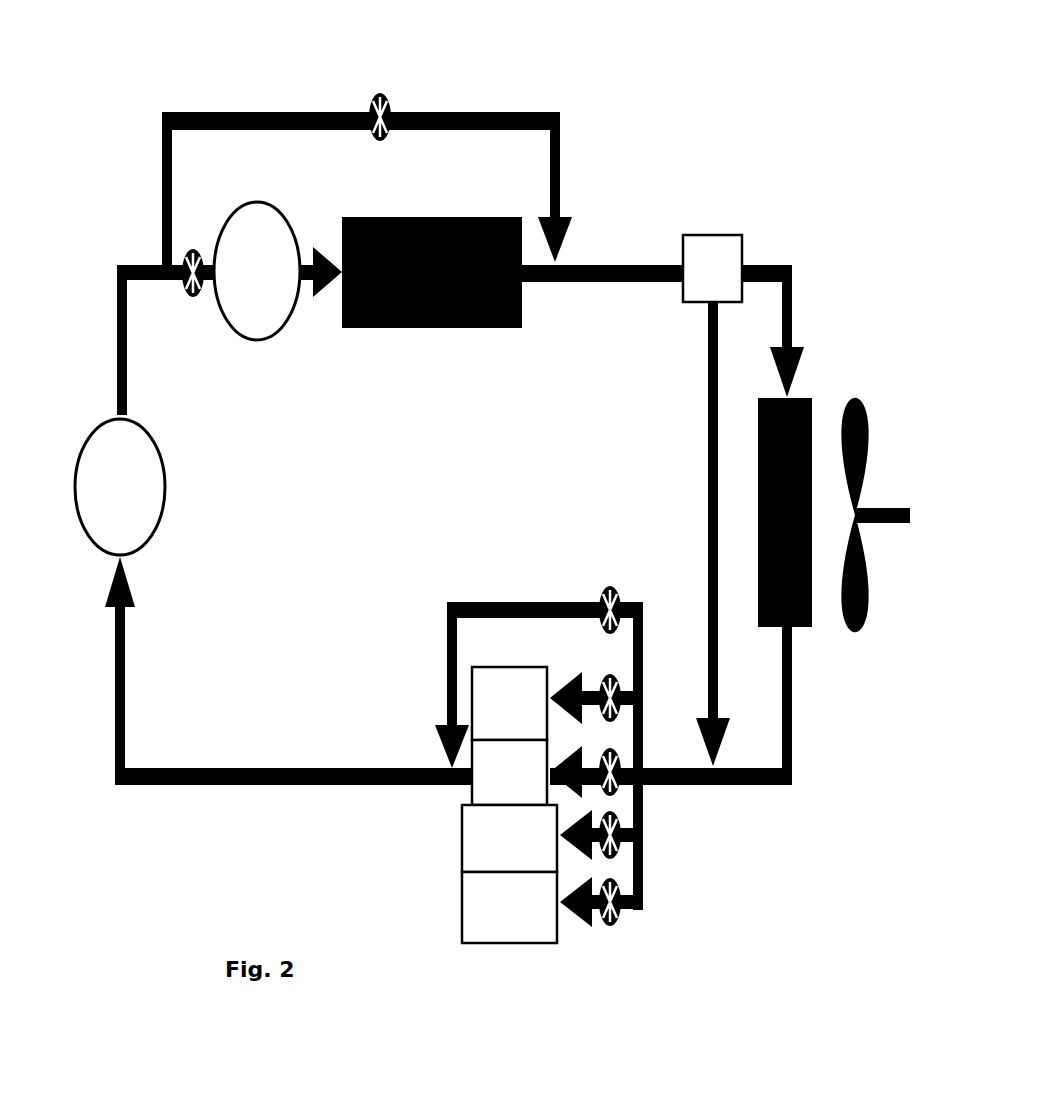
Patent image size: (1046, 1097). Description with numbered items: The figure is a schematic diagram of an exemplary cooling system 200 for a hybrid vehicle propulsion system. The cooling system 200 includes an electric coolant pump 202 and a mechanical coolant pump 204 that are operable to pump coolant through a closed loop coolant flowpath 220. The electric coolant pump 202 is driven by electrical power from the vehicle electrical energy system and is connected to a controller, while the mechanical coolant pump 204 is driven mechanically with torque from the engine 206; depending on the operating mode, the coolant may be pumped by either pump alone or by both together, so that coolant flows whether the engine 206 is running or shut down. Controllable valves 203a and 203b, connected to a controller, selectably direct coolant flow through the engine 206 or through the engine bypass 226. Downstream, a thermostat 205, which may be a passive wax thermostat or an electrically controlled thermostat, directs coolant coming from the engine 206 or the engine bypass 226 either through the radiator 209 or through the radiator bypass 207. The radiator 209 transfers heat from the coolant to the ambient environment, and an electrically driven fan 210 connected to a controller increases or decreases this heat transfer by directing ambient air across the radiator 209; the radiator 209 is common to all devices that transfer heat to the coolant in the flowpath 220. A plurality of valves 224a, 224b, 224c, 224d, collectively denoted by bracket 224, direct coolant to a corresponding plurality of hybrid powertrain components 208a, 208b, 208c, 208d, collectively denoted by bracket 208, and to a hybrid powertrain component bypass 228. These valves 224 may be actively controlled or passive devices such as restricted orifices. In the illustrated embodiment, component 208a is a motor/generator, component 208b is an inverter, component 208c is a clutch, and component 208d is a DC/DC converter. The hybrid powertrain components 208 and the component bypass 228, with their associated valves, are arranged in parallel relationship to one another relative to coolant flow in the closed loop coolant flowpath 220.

The cooling system 200 is at (845, 92).
The electric coolant pump 202 is at (165, 493).
The controllable valve 203a is at (196, 252).
The controllable valve 203b is at (377, 92).
The mechanical coolant pump 204 is at (262, 340).
The thermostat 205 is at (698, 233).
The engine 206 is at (457, 328).
The radiator bypass 207 is at (708, 437).
The hybrid powertrain components 208 is at (469, 844).
The motor/generator 208a is at (472, 695).
The inverter 208b is at (472, 792).
The clutch 208c is at (462, 848).
The DC/DC converter 208d is at (462, 897).
The radiator 209 is at (808, 397).
The electrically driven fan 210 is at (875, 508).
The closed loop coolant flowpath 220 is at (108, 256).
The valves 224 is at (660, 977).
The valve 224a is at (612, 676).
The valve 224b is at (612, 750).
The valve 224c is at (618, 592).
The valve 224d is at (618, 920).
The engine bypass 226 is at (445, 112).
The hybrid powertrain component bypass 228 is at (522, 602).